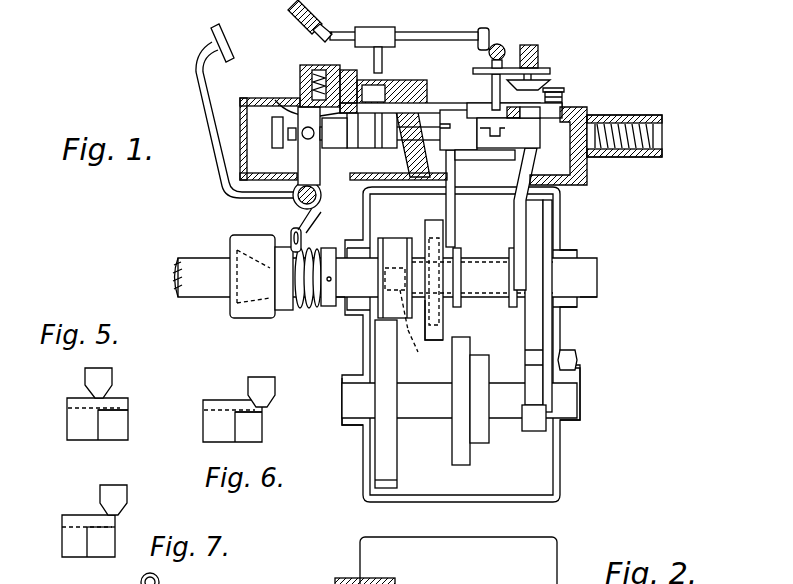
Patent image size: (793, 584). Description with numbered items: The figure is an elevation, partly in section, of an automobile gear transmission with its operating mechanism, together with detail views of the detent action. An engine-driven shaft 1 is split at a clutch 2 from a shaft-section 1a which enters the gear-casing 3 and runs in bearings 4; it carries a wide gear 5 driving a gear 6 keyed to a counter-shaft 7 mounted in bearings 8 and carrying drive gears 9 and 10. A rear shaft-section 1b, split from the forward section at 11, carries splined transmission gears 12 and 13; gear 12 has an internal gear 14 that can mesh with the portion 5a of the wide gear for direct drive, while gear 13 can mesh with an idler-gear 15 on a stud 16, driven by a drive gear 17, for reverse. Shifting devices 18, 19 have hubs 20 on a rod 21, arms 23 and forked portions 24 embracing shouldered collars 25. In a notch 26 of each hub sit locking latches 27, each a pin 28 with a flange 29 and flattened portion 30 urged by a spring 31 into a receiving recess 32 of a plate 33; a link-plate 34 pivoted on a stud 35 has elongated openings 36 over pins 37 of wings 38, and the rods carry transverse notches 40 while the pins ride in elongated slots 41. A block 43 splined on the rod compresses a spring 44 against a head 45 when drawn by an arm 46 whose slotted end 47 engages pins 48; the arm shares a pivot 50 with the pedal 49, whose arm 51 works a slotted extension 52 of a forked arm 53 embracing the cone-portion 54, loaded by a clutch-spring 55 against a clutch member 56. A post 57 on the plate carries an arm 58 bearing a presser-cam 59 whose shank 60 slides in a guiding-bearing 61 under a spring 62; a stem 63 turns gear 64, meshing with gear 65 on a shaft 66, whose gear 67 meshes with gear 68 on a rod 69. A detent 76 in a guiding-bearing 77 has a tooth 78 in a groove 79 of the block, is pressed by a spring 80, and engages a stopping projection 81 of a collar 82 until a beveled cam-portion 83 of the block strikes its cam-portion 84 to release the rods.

In FIG. 1, the shaft 1 is at (385, 277).
In FIG. 1, the shaft-section 1a is at (346, 282).
In FIG. 1, the rear shaft-section 1b is at (578, 282).
In FIG. 1, the clutch 2 is at (250, 318).
In FIG. 1, the gear-casing 3 is at (365, 357).
In FIG. 1, the bearings 4 is at (352, 312).
In FIG. 1, the wide gear 5 is at (388, 246).
In FIG. 1, the portion of wide gear 5a is at (428, 240).
In FIG. 1, the gear 6 is at (386, 404).
In FIG. 1, the counter-shaft 7 is at (459, 400).
In FIG. 1, the bearings 8 is at (350, 425).
In FIG. 1, the drive gear 9 is at (461, 401).
In FIG. 1, the drive gear 10 is at (480, 420).
In FIG. 1, the split point 11 is at (402, 308).
In FIG. 1, the transmission gear 12 is at (444, 320).
In FIG. 1, the transmission gear 13 is at (545, 232).
In FIG. 1, the internal gear 14 is at (419, 349).
In FIG. 1, the intermediate idler-gear 15 is at (526, 362).
In FIG. 1, the stud 16 is at (548, 344).
In FIG. 1, the drive gear 17 is at (533, 432).
In FIG. 1, the shifting device 18 is at (456, 200).
In FIG. 1, the shifting device 19 is at (515, 218).
In FIG. 1, the hub 20 is at (540, 148).
In FIG. 1, the rod 21 is at (362, 148).
In FIG. 1, the arm 23 is at (522, 165).
In FIG. 1, the forked portion 24 is at (494, 300).
In FIG. 1, the shouldered collar 25 is at (508, 256).
In FIG. 1, the notch 26 is at (464, 150).
In FIG. 1, the locking latch 27 is at (563, 100).
In FIG. 1, the pin 28 is at (535, 100).
In FIG. 2, the pin 28 is at (576, 576).
In FIG. 1, the flange 29 is at (565, 108).
In FIG. 1, the flattened portion 30 is at (600, 118).
In FIG. 1, the spring 31 is at (525, 110).
In FIG. 1, the receiving recess 32 is at (440, 110).
In FIG. 1, the plate 33 is at (580, 112).
In FIG. 1, the link-plate 34 is at (386, 148).
In FIG. 1, the stud 35 is at (380, 86).
In FIG. 2, the elongated openings 36 is at (388, 576).
In FIG. 2, the pins 37 is at (344, 576).
In FIG. 2, the wings 38 is at (441, 560).
In FIG. 1, the transverse notch 40 is at (432, 170).
In FIG. 1, the elongated slot 41 is at (440, 104).
In FIG. 1, the block 43 is at (286, 100).
In FIG. 5, the block 43 is at (66, 428).
In FIG. 6, the block 43 is at (202, 432).
In FIG. 7, the block 43 is at (62, 542).
In FIG. 1, the spring 44 is at (291, 141).
In FIG. 1, the head 45 is at (272, 128).
In FIG. 1, the arm 46 is at (306, 140).
In FIG. 1, the slotted end 47 is at (253, 98).
In FIG. 1, the pins 48 is at (290, 182).
In FIG. 1, the pedal 49 is at (228, 188).
In FIG. 1, the pivot 50 is at (322, 196).
In FIG. 1, the arm 51 is at (316, 224).
In FIG. 1, the slotted extension 52 is at (290, 236).
In FIG. 1, the forked arm 53 is at (300, 310).
In FIG. 1, the cone-portion 54 is at (282, 312).
In FIG. 1, the clutch-spring 55 is at (322, 306).
In FIG. 1, the clutch member 56 is at (272, 248).
In FIG. 1, the post 57 is at (500, 72).
In FIG. 1, the arm 58 is at (528, 82).
In FIG. 1, the presser-cam 59 is at (555, 75).
In FIG. 1, the shank 60 is at (530, 95).
In FIG. 1, the guiding-bearing 61 is at (530, 44).
In FIG. 1, the spring 62 is at (540, 50).
In FIG. 1, the stem 63 is at (490, 64).
In FIG. 1, the gear 64 is at (500, 44).
In FIG. 2, the gear 64 is at (198, 583).
In FIG. 1, the gear 65 is at (482, 28).
In FIG. 2, the gear 65 is at (160, 582).
In FIG. 1, the shaft 66 is at (446, 32).
In FIG. 1, the gear 67 is at (326, 34).
In FIG. 1, the gear 68 is at (292, 16).
In FIG. 1, the rod 69 is at (376, 28).
In FIG. 1, the detent 76 is at (346, 84).
In FIG. 1, the guiding-bearing 77 is at (306, 66).
In FIG. 5, the guiding-bearing 77 is at (106, 374).
In FIG. 6, the guiding-bearing 77 is at (272, 394).
In FIG. 7, the guiding-bearing 77 is at (114, 492).
In FIG. 5, the tooth 78 is at (108, 400).
In FIG. 6, the tooth 78 is at (268, 408).
In FIG. 7, the tooth 78 is at (118, 514).
In FIG. 5, the groove 79 is at (68, 404).
In FIG. 6, the groove 79 is at (220, 402).
In FIG. 7, the groove 79 is at (64, 522).
In FIG. 1, the spring 80 is at (320, 70).
In FIG. 5, the stopping projection 81 is at (120, 408).
In FIG. 6, the stopping projection 81 is at (250, 410).
In FIG. 7, the stopping projection 81 is at (106, 528).
In FIG. 1, the collar 82 is at (335, 148).
In FIG. 5, the collar 82 is at (112, 428).
In FIG. 6, the collar 82 is at (258, 430).
In FIG. 7, the collar 82 is at (104, 548).
In FIG. 5, the beveled cam-portion 83 is at (112, 400).
In FIG. 7, the beveled cam-portion 83 is at (120, 518).
In FIG. 5, the cam-portion 84 is at (90, 396).
In FIG. 6, the cam-portion 84 is at (246, 392).
In FIG. 7, the cam-portion 84 is at (102, 510).